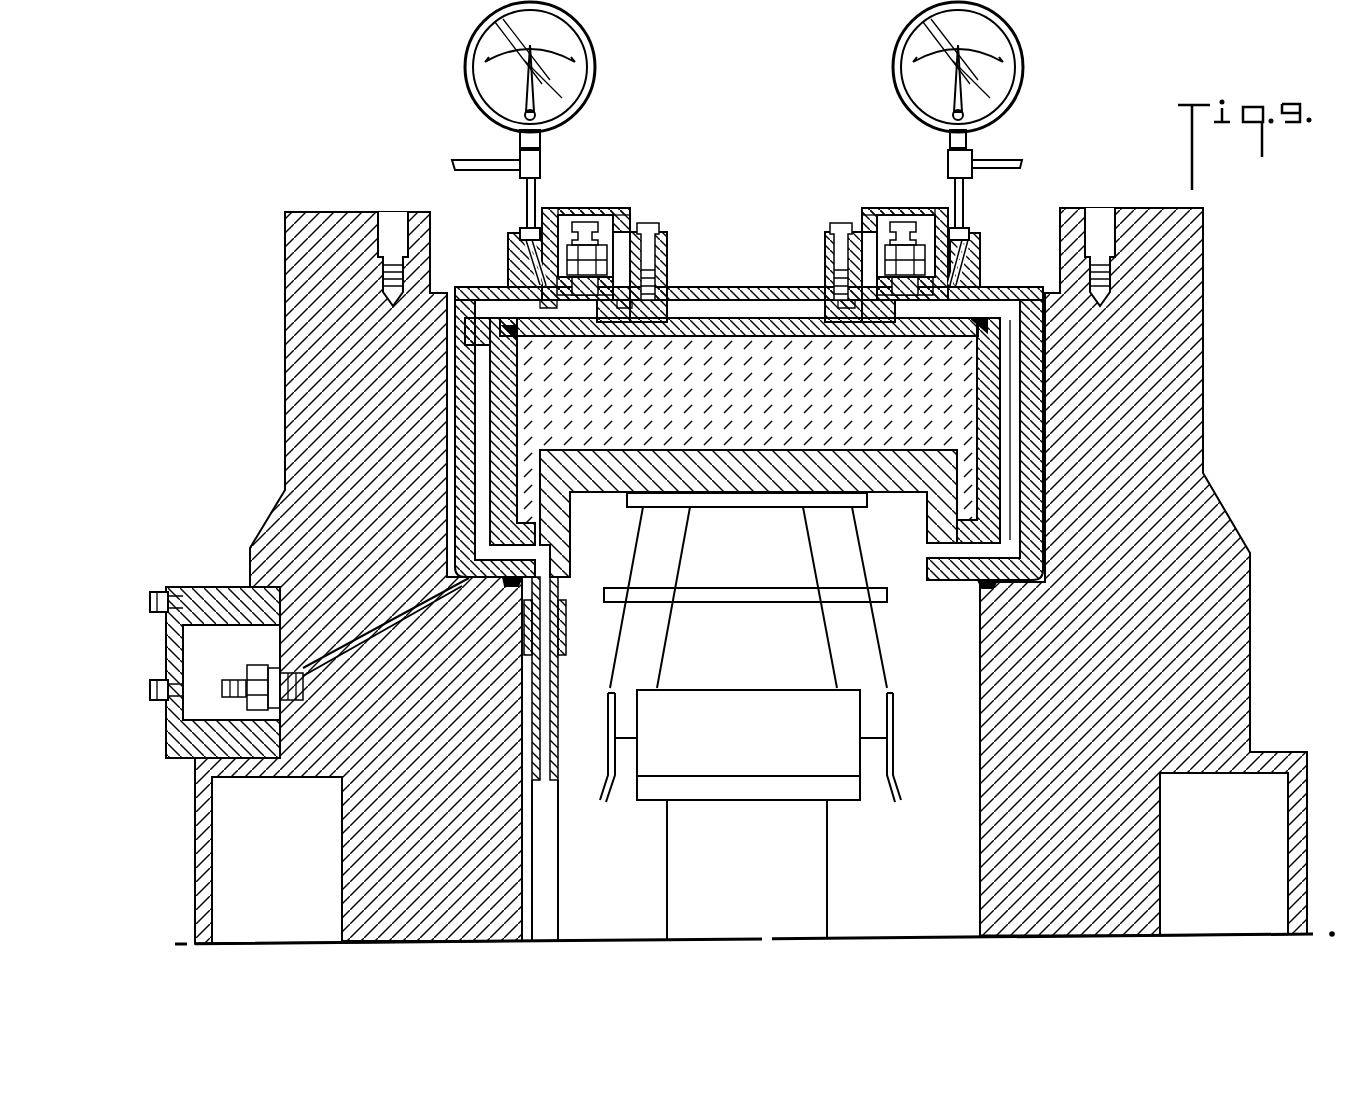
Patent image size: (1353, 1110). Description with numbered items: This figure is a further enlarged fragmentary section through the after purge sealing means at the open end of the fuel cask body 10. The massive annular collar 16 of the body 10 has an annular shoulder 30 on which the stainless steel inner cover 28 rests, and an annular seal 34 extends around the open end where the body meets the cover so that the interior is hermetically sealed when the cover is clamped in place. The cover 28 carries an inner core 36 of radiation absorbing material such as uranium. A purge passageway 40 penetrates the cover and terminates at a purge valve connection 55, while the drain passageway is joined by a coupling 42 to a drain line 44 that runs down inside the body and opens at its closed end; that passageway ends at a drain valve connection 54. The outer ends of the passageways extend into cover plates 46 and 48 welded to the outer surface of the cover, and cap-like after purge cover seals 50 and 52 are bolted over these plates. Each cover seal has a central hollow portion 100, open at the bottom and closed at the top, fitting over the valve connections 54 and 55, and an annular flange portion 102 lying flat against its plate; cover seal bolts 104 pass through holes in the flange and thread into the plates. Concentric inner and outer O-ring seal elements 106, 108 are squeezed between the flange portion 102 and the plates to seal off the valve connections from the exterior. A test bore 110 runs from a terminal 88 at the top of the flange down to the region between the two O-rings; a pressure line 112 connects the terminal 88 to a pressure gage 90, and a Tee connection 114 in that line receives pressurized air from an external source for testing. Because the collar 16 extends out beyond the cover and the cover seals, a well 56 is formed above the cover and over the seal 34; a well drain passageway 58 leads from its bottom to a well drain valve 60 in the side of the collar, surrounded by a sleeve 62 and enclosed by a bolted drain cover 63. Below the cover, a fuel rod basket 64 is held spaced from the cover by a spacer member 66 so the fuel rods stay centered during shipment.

The body 10 is at (1270, 521).
The annular stainless steel collar 16 is at (1250, 642).
The inner cover 28 is at (733, 330).
The annular shoulder 30 is at (468, 587).
The annular seal 34 is at (513, 583).
The inner core 36 is at (693, 345).
The purge passageway 40 is at (1010, 360).
The coupling 42 is at (562, 626).
The drain line 44 is at (556, 748).
The cover plate 46 is at (465, 287).
The cover plate 48 is at (1013, 287).
The after purge cover seal 50 is at (614, 208).
The after purge cover seal 52 is at (888, 208).
The drain valve connection 54 is at (585, 222).
The purge valve connection 55 is at (905, 222).
The well 56 is at (742, 240).
The well drain passageway 58 is at (382, 630).
The well drain valve 60 is at (255, 670).
The sleeve 62 is at (218, 587).
The drain cover 63 is at (165, 645).
The fuel rod basket 64 is at (825, 855).
The spacer member 66 is at (855, 545).
The terminal 88 is at (524, 232).
The pressure gage 90 is at (468, 92).
The central hollow portion 100 is at (628, 208).
The annular flange portion 102 is at (668, 255).
The cover seal bolts 104 is at (662, 283).
The inner O-ring seal element 106 is at (570, 298).
The outer O-ring seal element 108 is at (537, 300).
The test bore 110 is at (512, 242).
The pressure line 112 is at (538, 183).
The Tee connection 114 is at (542, 160).